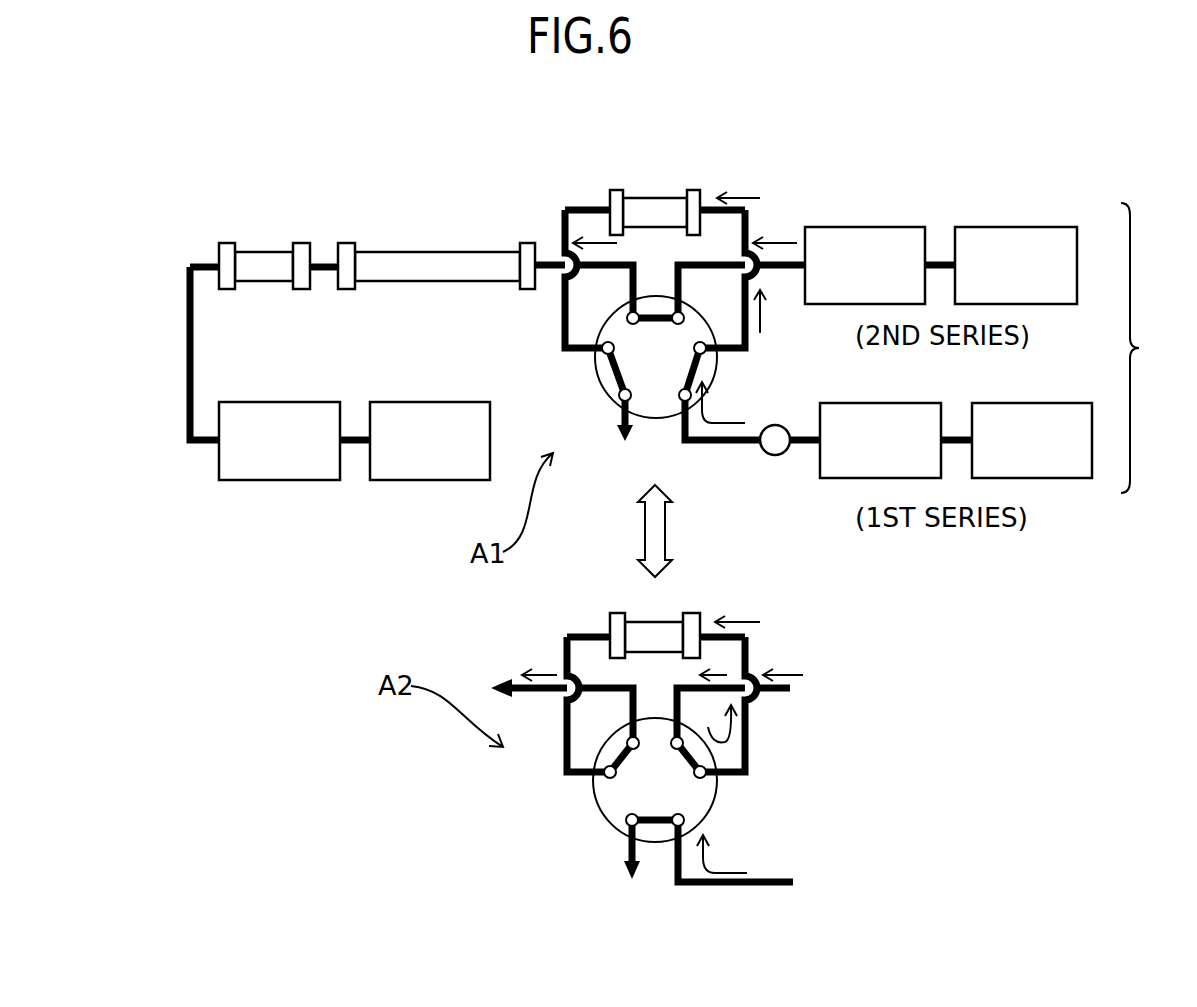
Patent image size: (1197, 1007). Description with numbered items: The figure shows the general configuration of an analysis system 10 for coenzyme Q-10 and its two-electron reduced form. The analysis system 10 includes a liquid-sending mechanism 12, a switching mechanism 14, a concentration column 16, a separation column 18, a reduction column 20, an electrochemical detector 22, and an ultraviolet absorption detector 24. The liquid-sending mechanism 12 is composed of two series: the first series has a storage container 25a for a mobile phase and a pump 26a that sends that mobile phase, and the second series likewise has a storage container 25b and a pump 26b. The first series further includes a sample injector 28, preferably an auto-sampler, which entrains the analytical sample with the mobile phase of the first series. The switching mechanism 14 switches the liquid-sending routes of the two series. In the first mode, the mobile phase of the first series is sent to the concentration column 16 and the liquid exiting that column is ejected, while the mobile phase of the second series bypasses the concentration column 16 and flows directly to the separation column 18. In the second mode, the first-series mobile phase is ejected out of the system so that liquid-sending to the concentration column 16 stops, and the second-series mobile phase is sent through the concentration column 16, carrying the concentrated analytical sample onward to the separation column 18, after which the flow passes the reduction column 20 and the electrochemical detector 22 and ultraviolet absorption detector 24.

The analysis system 10 is at (282, 130).
The liquid-sending mechanism 12 is at (1148, 348).
The switching mechanism 14 is at (713, 372).
The concentration column 16 is at (656, 196).
The separation column 18 is at (478, 243).
The reduction column 20 is at (276, 243).
The electrochemical detector 22 is at (297, 402).
The ultraviolet absorption detector 24 is at (428, 402).
The storage container 25a is at (1032, 403).
The storage container 25b is at (1017, 227).
The pump 26a is at (879, 403).
The pump 26b is at (882, 227).
The sample injector 28 is at (777, 456).